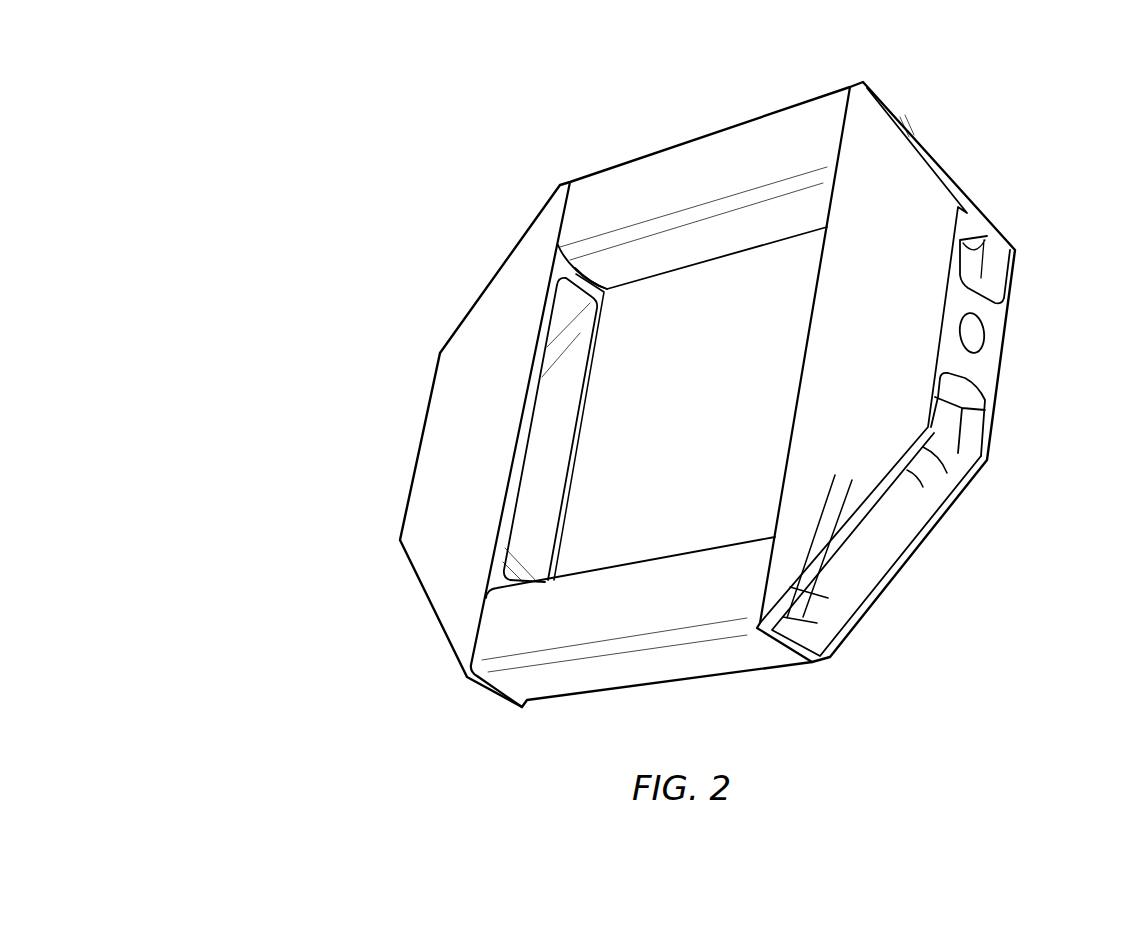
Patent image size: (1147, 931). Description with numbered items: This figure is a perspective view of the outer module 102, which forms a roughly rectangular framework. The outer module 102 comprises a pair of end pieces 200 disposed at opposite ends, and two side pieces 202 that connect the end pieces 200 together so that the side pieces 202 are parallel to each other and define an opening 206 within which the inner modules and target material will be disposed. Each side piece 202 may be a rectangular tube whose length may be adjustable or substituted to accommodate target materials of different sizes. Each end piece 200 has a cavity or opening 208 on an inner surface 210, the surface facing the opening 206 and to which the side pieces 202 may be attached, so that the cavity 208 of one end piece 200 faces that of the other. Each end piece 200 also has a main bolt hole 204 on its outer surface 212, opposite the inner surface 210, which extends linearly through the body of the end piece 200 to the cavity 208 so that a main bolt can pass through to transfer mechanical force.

The outer module 102 is at (352, 165).
The end piece 200 is at (452, 400).
The side piece 202 is at (773, 137).
The main bolt hole 204 is at (975, 333).
The opening 206 is at (745, 490).
The cavity or opening 208 is at (540, 447).
The inner surface 210 is at (607, 296).
The outer surface 212 is at (992, 313).